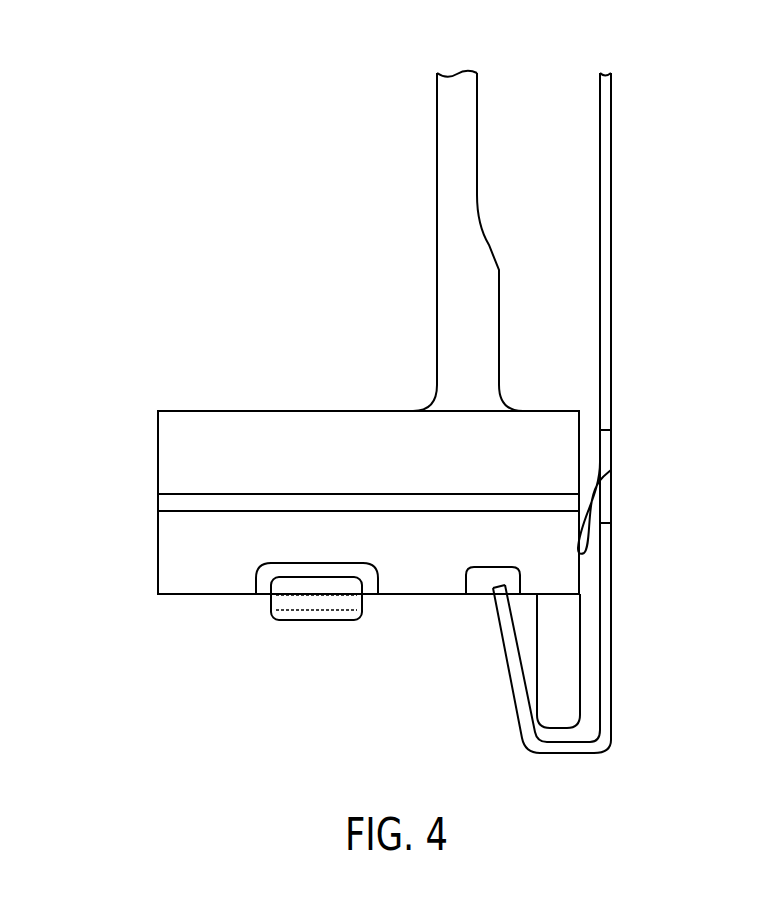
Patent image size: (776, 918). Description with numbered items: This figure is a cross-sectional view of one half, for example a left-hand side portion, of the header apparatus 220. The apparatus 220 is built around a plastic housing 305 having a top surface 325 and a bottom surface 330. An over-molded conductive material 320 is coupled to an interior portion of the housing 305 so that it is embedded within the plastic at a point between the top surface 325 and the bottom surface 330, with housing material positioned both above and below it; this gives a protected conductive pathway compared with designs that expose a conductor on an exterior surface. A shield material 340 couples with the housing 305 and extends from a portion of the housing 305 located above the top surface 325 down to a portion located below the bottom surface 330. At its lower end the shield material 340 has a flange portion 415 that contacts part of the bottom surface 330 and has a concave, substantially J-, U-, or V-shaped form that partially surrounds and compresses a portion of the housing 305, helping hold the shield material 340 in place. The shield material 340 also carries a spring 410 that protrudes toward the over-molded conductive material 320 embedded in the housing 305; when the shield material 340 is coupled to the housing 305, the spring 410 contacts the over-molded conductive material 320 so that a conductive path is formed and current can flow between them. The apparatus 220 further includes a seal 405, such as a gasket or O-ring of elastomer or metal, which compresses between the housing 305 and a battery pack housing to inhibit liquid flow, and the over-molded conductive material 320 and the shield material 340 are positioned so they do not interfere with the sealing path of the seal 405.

The apparatus 220 is at (94, 130).
The housing 305 is at (459, 105).
The over-molded conductive material 320 is at (170, 500).
The top surface 325 is at (178, 394).
The bottom surface 330 is at (180, 610).
The shield material 340 is at (611, 340).
The seal 405 is at (313, 593).
The spring 410 is at (585, 509).
The flange portion 415 is at (503, 706).